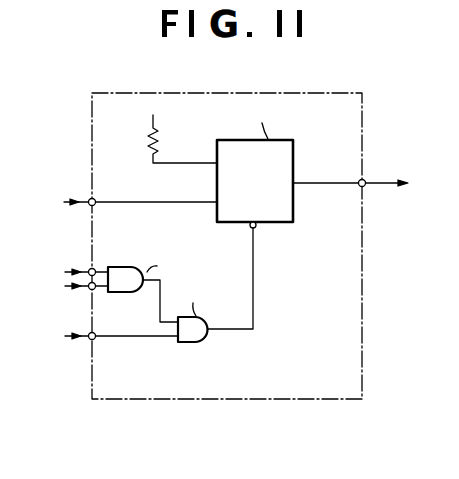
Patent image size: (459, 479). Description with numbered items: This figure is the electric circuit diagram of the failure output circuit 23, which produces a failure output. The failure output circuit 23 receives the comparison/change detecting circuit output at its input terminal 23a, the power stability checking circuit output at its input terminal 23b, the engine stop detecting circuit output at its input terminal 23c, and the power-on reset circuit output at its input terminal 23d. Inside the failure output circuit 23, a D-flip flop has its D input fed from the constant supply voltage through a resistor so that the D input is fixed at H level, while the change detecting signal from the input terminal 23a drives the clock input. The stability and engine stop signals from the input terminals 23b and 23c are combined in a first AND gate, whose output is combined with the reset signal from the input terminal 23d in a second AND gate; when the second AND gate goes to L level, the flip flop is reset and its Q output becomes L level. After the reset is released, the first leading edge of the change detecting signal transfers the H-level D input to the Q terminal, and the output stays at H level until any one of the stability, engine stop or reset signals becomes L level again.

The failure output circuit 23 is at (339, 91).
The input terminal 23a is at (96, 200).
The input terminal 23b is at (96, 270).
The input terminal 23c is at (94, 290).
The input terminal 23d is at (94, 341).